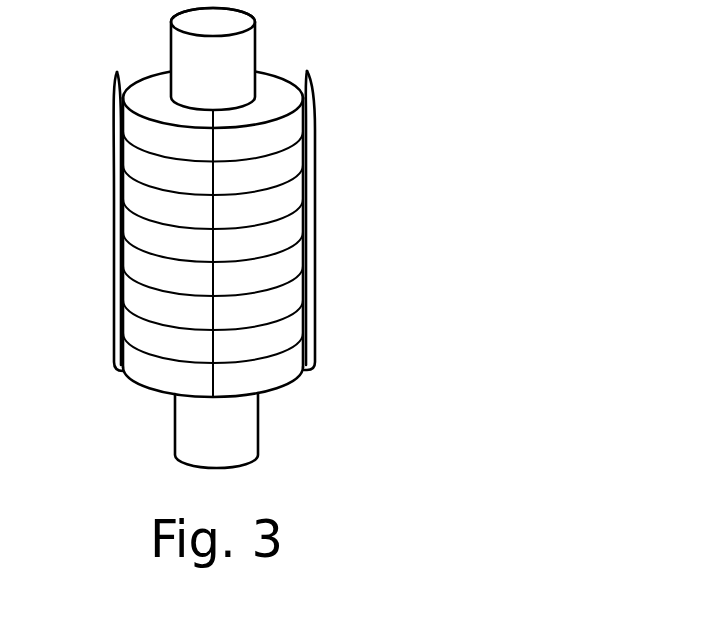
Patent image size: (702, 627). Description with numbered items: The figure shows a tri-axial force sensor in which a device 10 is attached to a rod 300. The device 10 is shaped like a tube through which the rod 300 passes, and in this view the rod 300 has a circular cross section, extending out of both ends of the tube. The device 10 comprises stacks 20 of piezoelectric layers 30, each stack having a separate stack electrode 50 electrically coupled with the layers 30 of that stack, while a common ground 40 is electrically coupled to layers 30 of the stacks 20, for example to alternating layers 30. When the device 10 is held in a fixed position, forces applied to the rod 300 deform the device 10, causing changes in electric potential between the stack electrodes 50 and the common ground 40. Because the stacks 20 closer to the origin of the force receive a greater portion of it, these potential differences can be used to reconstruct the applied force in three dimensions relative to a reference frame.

The device 10 is at (137, 410).
The stacks 20 is at (288, 84).
The piezoelectric layers 30 is at (290, 128).
The common ground 40 is at (272, 73).
The stack electrode 50 is at (312, 237).
The rod 300 is at (251, 432).